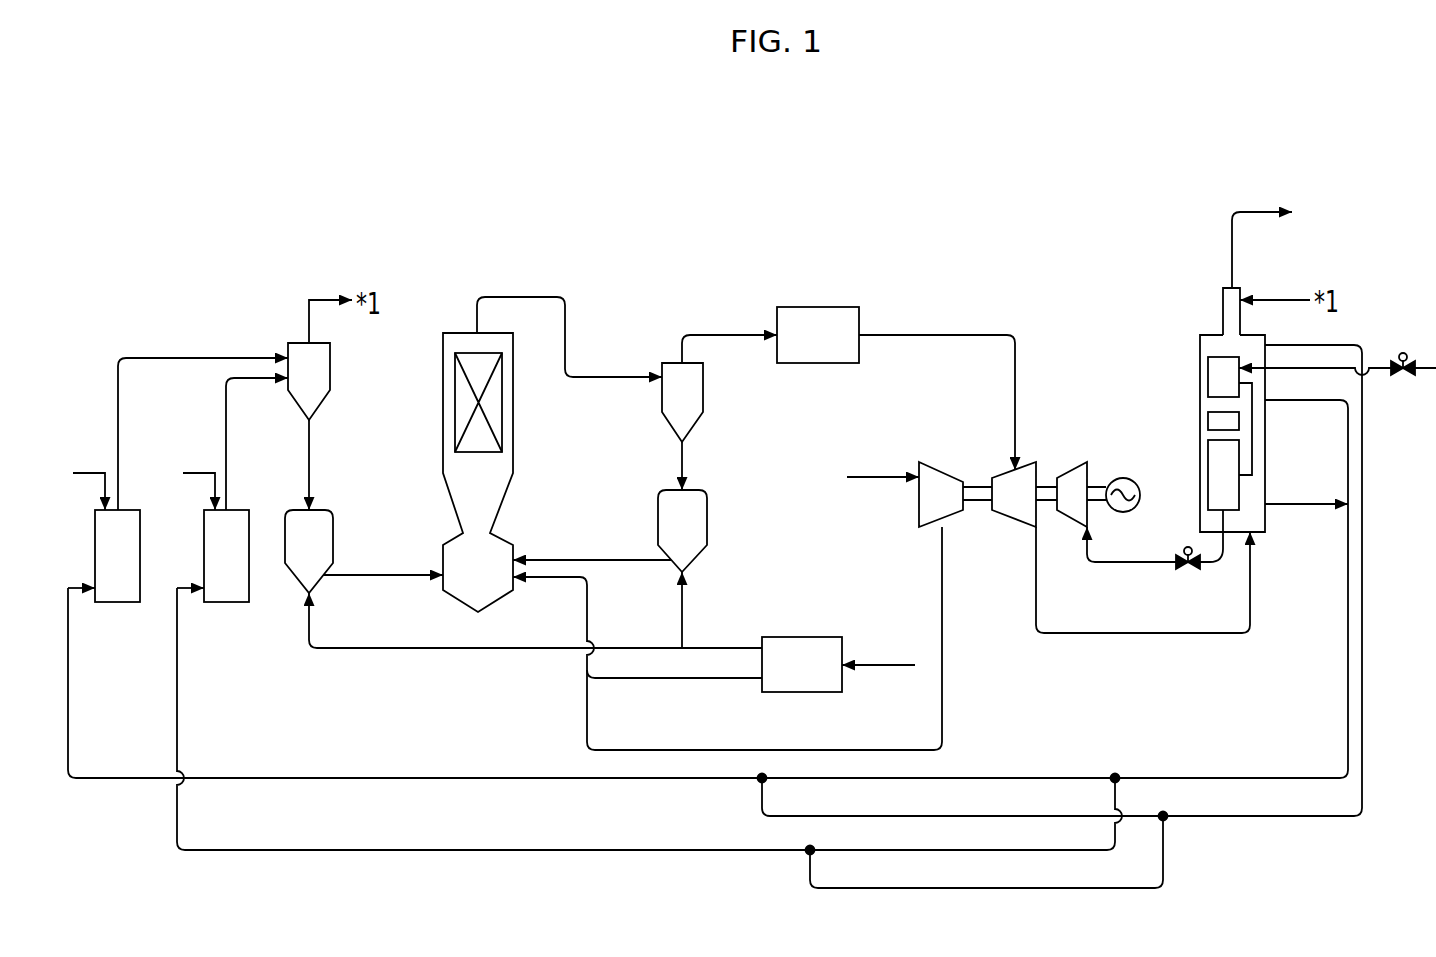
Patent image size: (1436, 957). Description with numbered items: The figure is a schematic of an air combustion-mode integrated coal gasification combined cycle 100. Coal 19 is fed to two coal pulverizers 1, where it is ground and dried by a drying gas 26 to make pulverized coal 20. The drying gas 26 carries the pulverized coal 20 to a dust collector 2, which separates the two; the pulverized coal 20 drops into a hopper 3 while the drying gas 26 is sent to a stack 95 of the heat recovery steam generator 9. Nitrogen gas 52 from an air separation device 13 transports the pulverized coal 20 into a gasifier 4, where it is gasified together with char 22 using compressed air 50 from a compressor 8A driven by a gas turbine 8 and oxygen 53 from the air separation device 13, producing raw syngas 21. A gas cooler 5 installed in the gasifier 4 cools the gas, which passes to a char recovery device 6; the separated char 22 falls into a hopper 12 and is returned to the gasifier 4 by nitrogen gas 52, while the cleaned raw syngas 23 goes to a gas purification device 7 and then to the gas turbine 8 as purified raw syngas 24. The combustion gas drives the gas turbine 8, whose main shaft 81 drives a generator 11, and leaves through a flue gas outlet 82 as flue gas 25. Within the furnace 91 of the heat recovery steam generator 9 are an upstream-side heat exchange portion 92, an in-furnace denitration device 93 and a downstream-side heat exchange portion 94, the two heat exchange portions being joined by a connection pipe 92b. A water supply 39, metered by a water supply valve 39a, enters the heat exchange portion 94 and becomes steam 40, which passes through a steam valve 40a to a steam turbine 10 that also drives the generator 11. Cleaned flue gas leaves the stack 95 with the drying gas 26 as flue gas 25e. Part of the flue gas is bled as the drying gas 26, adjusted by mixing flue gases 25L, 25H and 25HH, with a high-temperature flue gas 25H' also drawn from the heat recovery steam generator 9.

The coal pulverizer 1 is at (118, 603).
The dust collector 2 is at (332, 370).
The hopper 3 is at (335, 520).
The gasifier 4 is at (455, 333).
The gas cooler 5 is at (455, 400).
The char recovery device 6 is at (705, 390).
The gas purification device 7 is at (818, 307).
The gas turbine 8 is at (1002, 518).
The compressor 8A is at (918, 505).
The heat recovery steam generator 9 is at (1213, 333).
The steam turbine 10 is at (1072, 520).
The generator 11 is at (1125, 478).
The hopper 12 is at (708, 522).
The air separation device 13 is at (802, 637).
The coal 19 is at (96, 470).
The pulverized coal 20 is at (170, 358).
The raw syngas 21 is at (518, 297).
The char 22 is at (685, 457).
The raw syngas 23 is at (740, 337).
The raw syngas 24 is at (928, 335).
The flue gas 25 is at (1118, 633).
The flue gas 25e is at (1262, 212).
The flue gas 25H is at (1306, 452).
The flue gas 25HH is at (1313, 507).
The high-temperature flue gas 25H' is at (1231, 641).
The flue gas 25L is at (1258, 816).
The drying gas 26 is at (306, 322).
The water supply 39 is at (1425, 375).
The water supply valve 39a is at (1402, 353).
The steam 40 is at (1117, 562).
The steam valve 40a is at (1186, 572).
The compressed air 50 is at (942, 667).
The nitrogen gas 52 is at (683, 608).
The oxygen 53 is at (625, 680).
The main shaft 81 is at (1048, 483).
The flue gas outlet 82 is at (1035, 572).
The furnace 91 is at (1205, 520).
The upstream-side heat exchange portion 92 is at (1213, 467).
The connection pipe 92b is at (1253, 462).
The in-furnace denitration device 93 is at (1217, 422).
The downstream-side heat exchange portion 94 is at (1213, 377).
The stack 95 is at (1243, 323).
The integrated coal gasification combined cycle 100 is at (1094, 212).